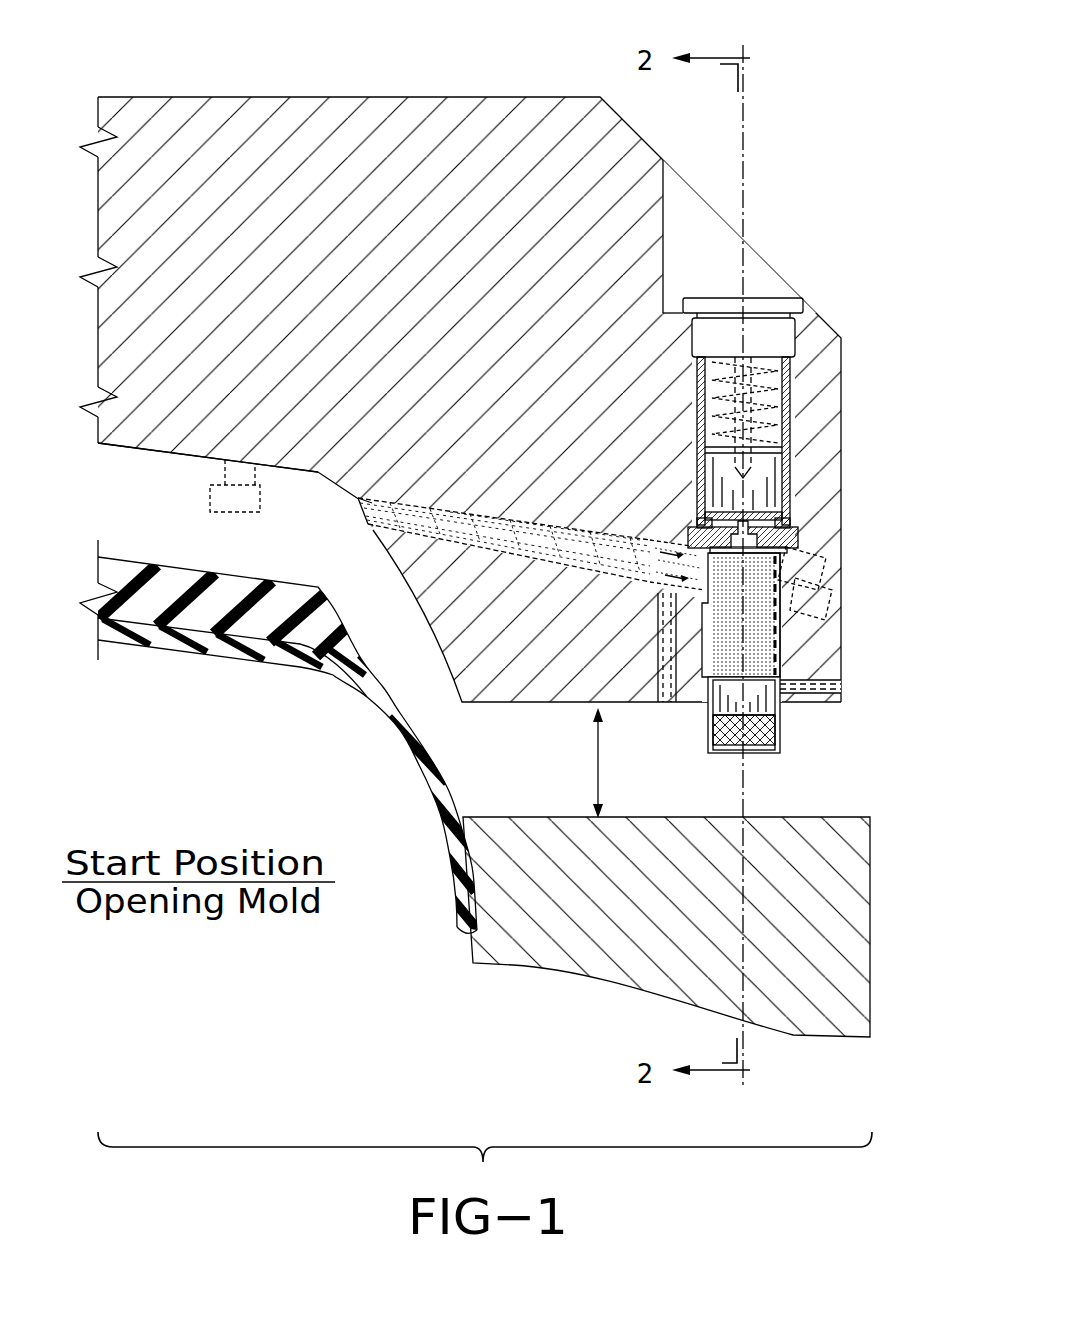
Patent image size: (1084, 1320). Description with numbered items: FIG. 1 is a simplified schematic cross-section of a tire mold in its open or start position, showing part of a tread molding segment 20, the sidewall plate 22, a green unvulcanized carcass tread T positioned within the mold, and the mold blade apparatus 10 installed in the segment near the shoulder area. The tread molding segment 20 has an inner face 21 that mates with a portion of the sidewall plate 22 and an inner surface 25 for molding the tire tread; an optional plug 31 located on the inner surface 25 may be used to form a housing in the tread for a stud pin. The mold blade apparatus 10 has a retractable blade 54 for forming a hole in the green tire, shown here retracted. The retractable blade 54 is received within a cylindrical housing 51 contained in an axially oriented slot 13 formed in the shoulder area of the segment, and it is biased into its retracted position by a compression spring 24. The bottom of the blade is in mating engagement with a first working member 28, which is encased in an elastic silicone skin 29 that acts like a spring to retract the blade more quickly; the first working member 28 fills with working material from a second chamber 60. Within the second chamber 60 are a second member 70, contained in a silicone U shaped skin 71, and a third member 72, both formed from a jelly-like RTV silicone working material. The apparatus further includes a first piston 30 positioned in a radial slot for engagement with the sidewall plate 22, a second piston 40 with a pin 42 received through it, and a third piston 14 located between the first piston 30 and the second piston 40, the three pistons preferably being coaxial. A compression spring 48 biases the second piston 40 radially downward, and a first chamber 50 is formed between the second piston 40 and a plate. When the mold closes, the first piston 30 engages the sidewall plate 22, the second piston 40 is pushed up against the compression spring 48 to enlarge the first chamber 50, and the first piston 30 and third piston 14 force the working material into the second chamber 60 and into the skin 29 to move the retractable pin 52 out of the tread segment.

The mold blade apparatus 10 is at (866, 530).
The axially oriented slot 13 is at (370, 505).
The third piston 14 is at (715, 712).
The tread molding segment 20 is at (255, 120).
The inner face 21 is at (565, 705).
The sidewall plate 22 is at (850, 855).
The compression spring 24 is at (527, 535).
The inner surface 25 is at (187, 453).
The first working member 28 is at (652, 572).
The silicone skin 29 is at (676, 548).
The first piston 30 is at (765, 745).
The plug 31 is at (229, 498).
The second piston 40 is at (770, 487).
The pin 42 is at (745, 475).
The compression spring 48 is at (765, 410).
The first chamber 50 is at (783, 525).
The cylindrical housing 51 is at (478, 513).
The retractable pin 52 is at (368, 525).
The retractable blade 54 is at (798, 530).
The second chamber 60 is at (787, 563).
The second member 70 is at (780, 647).
The silicone U shaped skin 71 is at (783, 655).
The third member 72 is at (780, 593).
The green unvulcanized carcass tread T is at (335, 598).